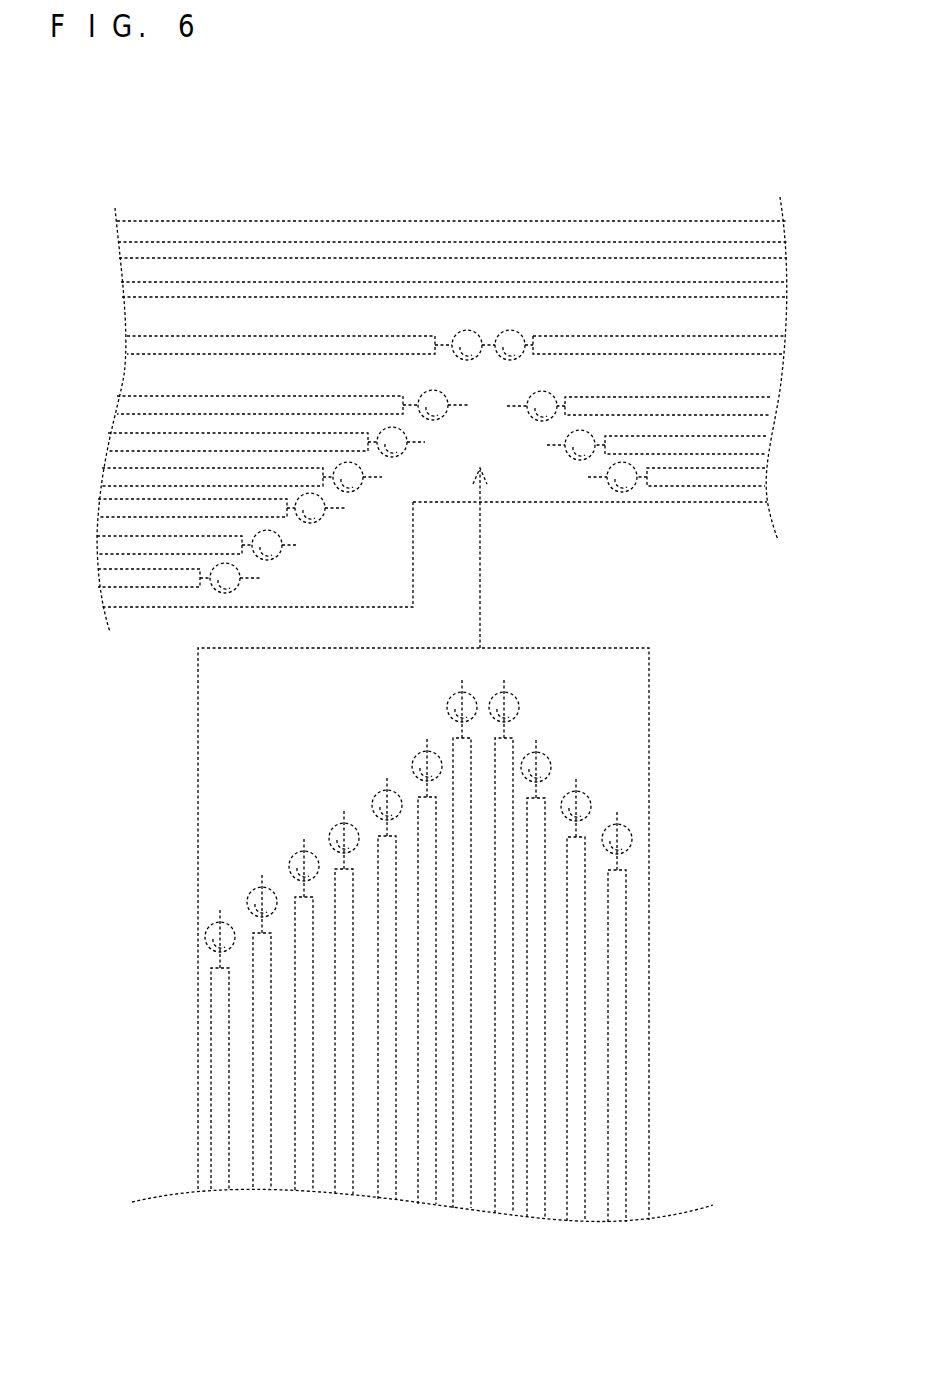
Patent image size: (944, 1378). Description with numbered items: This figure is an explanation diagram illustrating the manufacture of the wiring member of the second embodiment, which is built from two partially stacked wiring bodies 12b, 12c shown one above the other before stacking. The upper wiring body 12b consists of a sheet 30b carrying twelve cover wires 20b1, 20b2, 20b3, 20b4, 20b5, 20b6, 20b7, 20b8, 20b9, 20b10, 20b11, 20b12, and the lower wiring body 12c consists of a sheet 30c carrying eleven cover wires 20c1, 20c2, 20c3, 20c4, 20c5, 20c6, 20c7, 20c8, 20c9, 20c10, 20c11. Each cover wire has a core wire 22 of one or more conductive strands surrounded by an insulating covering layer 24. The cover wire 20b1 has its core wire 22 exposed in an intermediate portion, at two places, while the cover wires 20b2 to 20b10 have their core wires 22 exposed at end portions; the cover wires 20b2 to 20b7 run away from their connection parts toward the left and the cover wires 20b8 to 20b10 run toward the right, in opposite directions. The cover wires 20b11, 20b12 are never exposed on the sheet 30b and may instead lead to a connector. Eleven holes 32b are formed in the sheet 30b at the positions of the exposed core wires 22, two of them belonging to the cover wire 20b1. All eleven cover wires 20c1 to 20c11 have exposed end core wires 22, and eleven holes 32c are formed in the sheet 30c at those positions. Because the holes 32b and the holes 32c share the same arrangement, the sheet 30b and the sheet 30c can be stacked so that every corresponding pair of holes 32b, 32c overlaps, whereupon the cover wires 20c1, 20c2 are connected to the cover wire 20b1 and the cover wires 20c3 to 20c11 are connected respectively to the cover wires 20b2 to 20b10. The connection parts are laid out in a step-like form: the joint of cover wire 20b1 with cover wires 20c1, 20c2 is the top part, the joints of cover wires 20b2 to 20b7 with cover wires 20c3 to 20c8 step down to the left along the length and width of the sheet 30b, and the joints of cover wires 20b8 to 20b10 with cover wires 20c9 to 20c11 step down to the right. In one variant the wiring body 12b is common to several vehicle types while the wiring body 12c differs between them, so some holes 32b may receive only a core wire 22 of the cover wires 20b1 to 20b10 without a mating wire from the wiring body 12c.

The wiring body 12b is at (442, 386).
The wiring body 12c is at (471, 934).
The cover wire 20b1 is at (420, 343).
The cover wire 20b2 is at (245, 403).
The cover wire 20b3 is at (223, 440).
The cover wire 20b4 is at (202, 475).
The cover wire 20b5 is at (183, 506).
The cover wire 20b6 is at (160, 543).
The cover wire 20b7 is at (142, 576).
The cover wire 20b8 is at (676, 404).
The cover wire 20b9 is at (696, 443).
The cover wire 20b10 is at (722, 475).
The cover wire 20b11 is at (497, 247).
The cover wire 20b12 is at (499, 290).
The cover wire 20c1 is at (465, 1020).
The cover wire 20c2 is at (512, 1007).
The cover wire 20c3 is at (425, 1037).
The cover wire 20c4 is at (375, 1069).
The cover wire 20c5 is at (338, 1073).
The cover wire 20c6 is at (293, 1100).
The cover wire 20c7 is at (254, 1105).
The cover wire 20c8 is at (202, 1135).
The cover wire 20c9 is at (557, 1050).
The cover wire 20c10 is at (598, 1057).
The cover wire 20c11 is at (652, 1086).
The core wire 22 is at (492, 525).
The covering layer 24 is at (658, 669).
The sheet 30b is at (444, 384).
The sheet 30c is at (435, 1133).
The hole 32b is at (423, 405).
The hole 32c is at (421, 778).